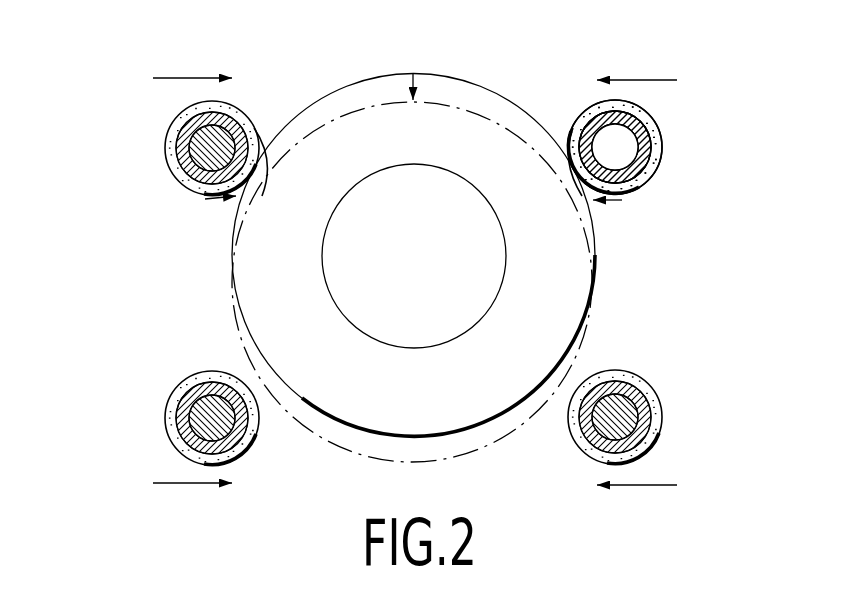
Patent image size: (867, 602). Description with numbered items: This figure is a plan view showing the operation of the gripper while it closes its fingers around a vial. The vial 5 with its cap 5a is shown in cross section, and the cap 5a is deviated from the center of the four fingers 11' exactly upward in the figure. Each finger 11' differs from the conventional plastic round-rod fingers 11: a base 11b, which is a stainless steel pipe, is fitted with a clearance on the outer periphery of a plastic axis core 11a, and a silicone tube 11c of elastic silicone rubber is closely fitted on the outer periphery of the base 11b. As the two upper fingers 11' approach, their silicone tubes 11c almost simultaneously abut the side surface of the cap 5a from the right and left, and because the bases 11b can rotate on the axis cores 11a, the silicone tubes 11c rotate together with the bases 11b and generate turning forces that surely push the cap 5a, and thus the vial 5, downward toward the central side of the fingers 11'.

The vial 5 is at (225, 250).
The cap 5a is at (555, 303).
The fingers 11 is at (671, 417).
The finger 11' is at (358, 237).
The axis core 11a is at (621, 145).
The base 11b is at (637, 160).
The silicone tube 11c is at (625, 188).